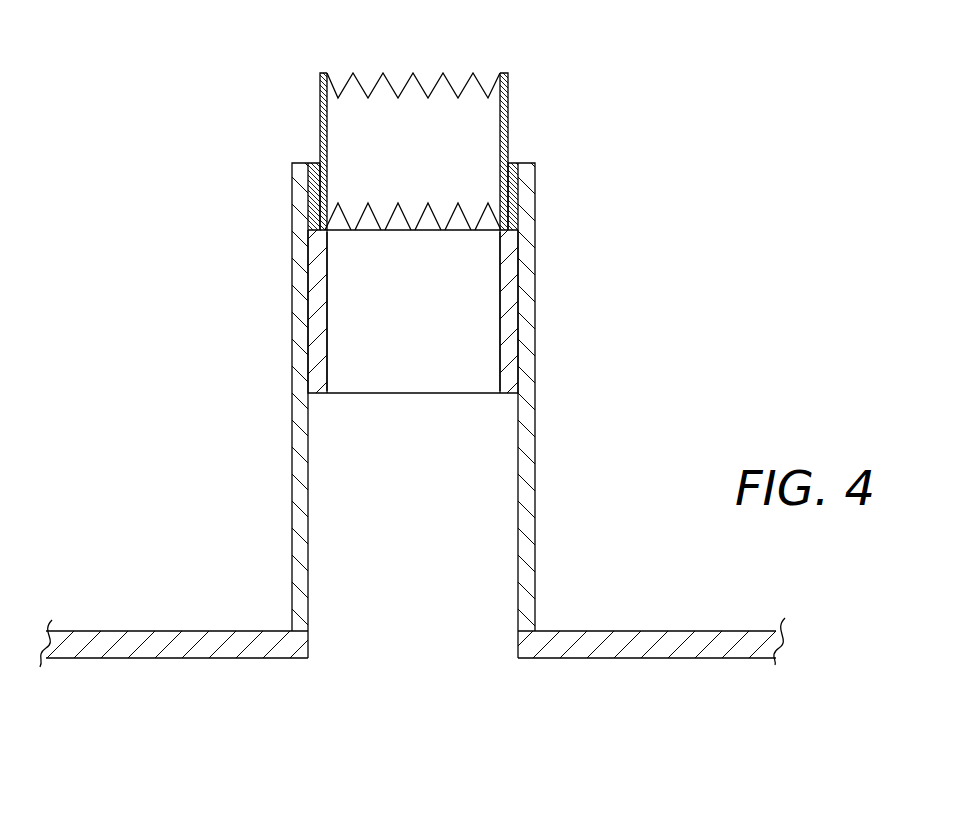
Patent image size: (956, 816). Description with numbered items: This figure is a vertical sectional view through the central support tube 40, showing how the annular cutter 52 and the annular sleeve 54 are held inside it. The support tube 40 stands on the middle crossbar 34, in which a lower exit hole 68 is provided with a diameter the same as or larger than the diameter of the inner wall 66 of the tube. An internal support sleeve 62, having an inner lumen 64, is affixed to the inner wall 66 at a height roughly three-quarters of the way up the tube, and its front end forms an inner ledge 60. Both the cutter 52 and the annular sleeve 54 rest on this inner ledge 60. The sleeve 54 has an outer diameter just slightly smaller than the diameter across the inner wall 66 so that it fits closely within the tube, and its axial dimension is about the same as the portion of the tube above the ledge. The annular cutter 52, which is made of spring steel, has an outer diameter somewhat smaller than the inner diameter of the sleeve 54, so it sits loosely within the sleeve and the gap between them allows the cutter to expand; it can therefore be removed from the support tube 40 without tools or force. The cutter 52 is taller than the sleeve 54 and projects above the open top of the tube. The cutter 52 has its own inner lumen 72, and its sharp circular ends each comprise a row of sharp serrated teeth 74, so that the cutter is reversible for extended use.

The middle crossbar 34 is at (157, 631).
The central support tube 40 is at (290, 295).
The annular cutter 52 is at (507, 117).
The annular sleeve 54 is at (513, 197).
The inner ledge 60 is at (315, 210).
The internal support sleeve 62 is at (510, 307).
The inner lumen 64 is at (427, 359).
The inner wall 66 is at (308, 563).
The lower exit hole 68 is at (430, 645).
The inner lumen 72 is at (423, 191).
The serrated teeth 74 is at (338, 97).